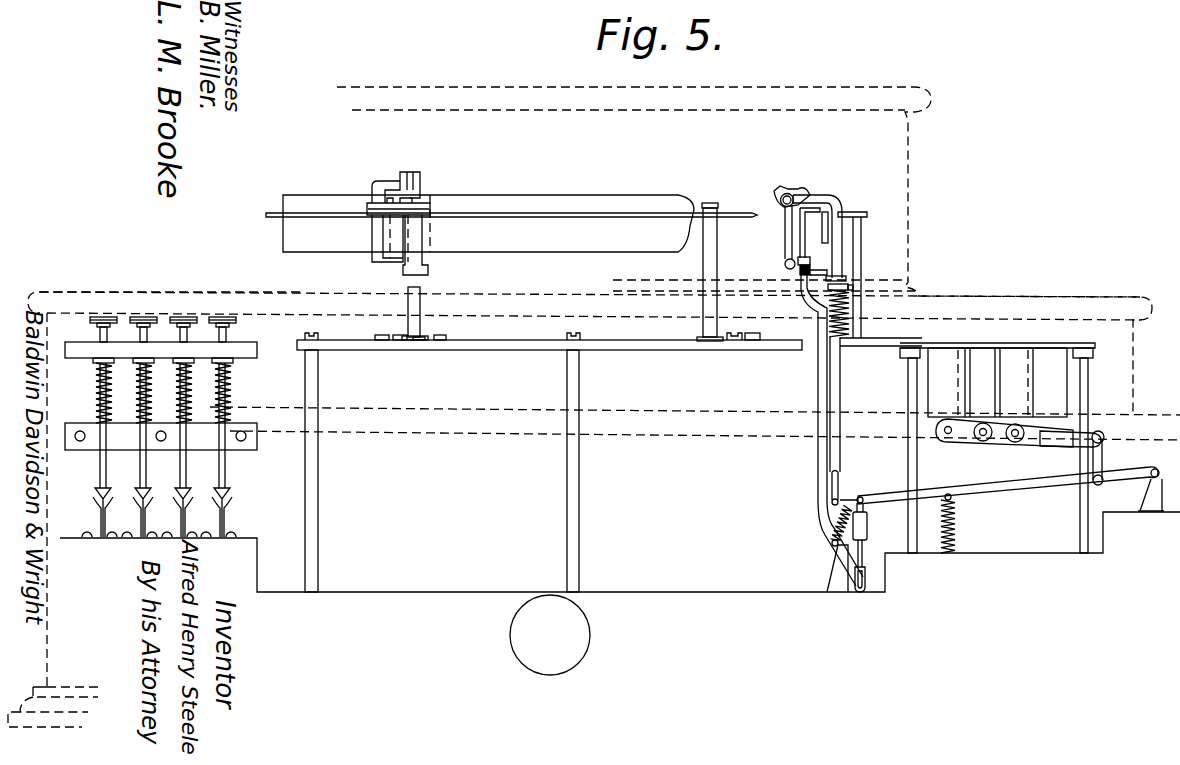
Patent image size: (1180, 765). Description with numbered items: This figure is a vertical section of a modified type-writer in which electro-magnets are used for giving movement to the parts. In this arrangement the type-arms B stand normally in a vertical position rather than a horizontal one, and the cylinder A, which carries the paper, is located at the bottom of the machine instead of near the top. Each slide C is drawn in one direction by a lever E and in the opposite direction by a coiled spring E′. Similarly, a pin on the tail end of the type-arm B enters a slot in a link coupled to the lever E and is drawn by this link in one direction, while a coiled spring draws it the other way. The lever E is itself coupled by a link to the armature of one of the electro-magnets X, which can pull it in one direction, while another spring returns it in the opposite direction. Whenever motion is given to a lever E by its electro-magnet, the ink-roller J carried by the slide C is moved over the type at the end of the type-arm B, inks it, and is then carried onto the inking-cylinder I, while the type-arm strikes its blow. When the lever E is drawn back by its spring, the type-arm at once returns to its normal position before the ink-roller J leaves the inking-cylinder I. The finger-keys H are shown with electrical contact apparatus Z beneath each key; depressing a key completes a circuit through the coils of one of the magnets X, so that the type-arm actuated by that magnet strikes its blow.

The finger-key H is at (161, 393).
The electrical contact apparatus Z is at (167, 510).
The cylinder A is at (550, 635).
The inking-cylinder I is at (803, 212).
The ink-roller J is at (784, 263).
The coiled spring E′ is at (847, 312).
The type-arm B is at (831, 433).
The slide C is at (876, 421).
The spring B′ is at (837, 522).
The lever E is at (1011, 471).
The electro-magnet X is at (1000, 448).